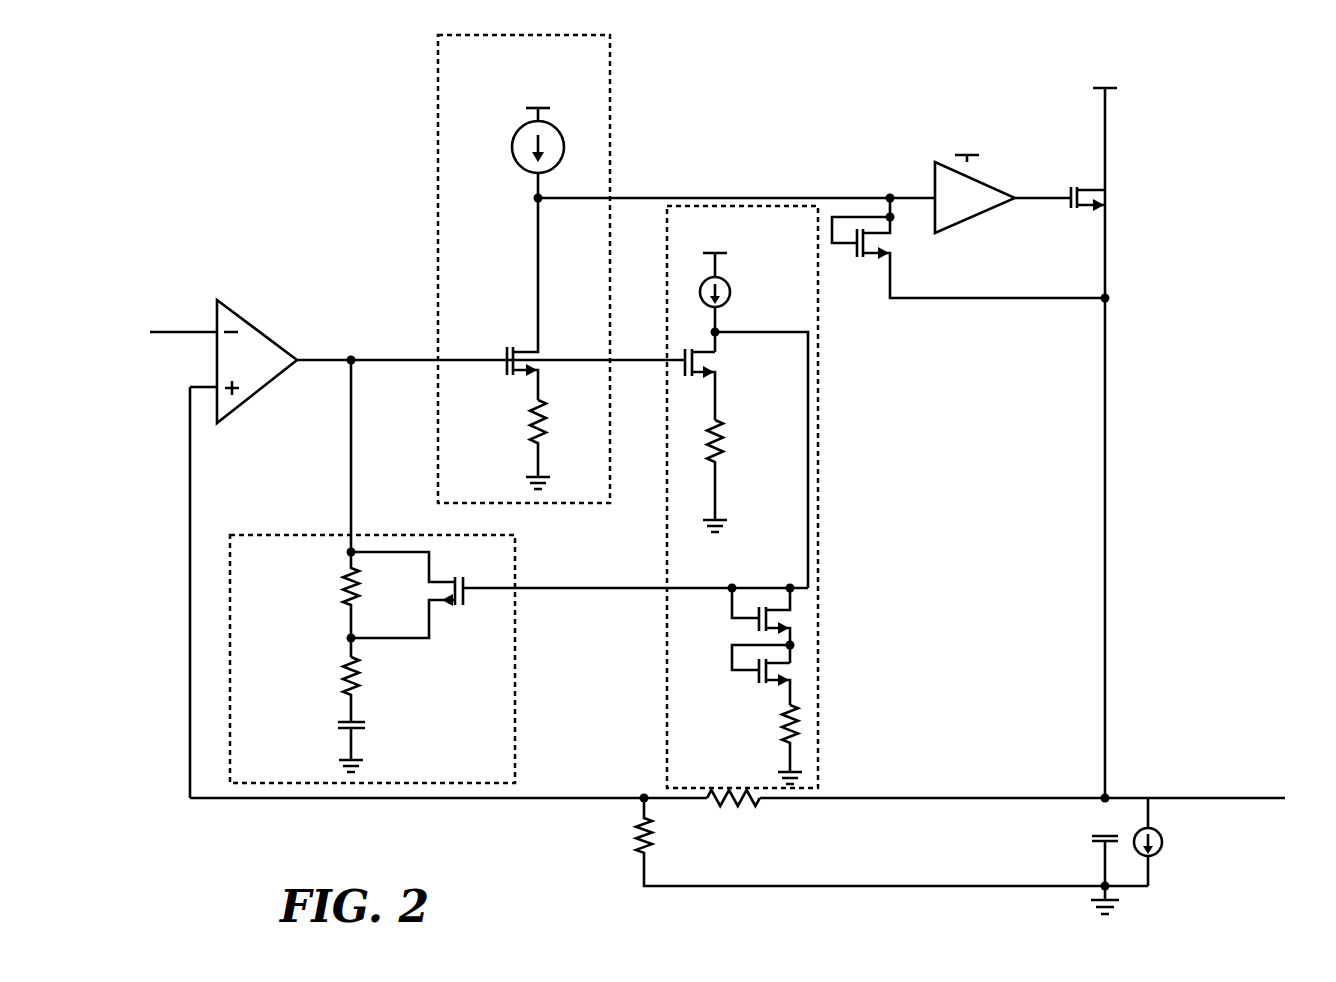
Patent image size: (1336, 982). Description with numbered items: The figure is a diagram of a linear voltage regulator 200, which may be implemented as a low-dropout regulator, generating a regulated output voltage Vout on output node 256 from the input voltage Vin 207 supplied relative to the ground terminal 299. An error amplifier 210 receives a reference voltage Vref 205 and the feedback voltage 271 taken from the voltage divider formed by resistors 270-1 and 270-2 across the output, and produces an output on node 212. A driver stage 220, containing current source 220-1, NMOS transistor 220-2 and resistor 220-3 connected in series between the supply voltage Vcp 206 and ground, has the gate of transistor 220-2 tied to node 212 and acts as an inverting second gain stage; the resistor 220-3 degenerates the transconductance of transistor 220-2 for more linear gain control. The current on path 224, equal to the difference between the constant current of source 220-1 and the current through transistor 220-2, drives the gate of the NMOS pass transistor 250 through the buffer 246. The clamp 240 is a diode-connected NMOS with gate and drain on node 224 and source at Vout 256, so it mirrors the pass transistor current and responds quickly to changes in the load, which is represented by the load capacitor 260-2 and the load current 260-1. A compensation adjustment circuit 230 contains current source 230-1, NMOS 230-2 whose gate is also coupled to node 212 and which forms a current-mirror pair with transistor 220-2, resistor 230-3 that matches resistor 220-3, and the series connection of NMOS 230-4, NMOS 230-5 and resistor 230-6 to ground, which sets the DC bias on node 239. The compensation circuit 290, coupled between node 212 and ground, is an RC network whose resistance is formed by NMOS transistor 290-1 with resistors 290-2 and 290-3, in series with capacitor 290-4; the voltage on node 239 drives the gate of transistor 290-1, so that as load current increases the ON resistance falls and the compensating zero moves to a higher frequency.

The linear voltage regulator 200 is at (322, 170).
The reference voltage Vref 205 is at (164, 332).
The supply voltage Vcp 206 is at (538, 108).
The input voltage Vin 207 is at (1109, 88).
The error amplifier 210 is at (260, 369).
The output node of error amplifier 212 is at (351, 356).
The driver stage 220 is at (488, 494).
The current source 220-1 is at (512, 151).
The NMOS transistor 220-2 is at (524, 350).
The resistor 220-3 is at (528, 425).
The path 224 is at (803, 198).
The compensation adjustment circuit 230 is at (721, 774).
The current source 230-1 is at (731, 294).
The NMOS transistor 230-2 is at (722, 368).
The resistor 230-3 is at (724, 442).
The NMOS transistor 230-4 is at (796, 626).
The NMOS transistor 230-5 is at (796, 676).
The resistor 230-6 is at (798, 720).
The node 239 is at (611, 588).
The clamp 240 is at (882, 254).
The buffer 246 is at (983, 208).
The pass transistor 250 is at (1100, 202).
The output node Vout 256 is at (1258, 798).
The load current 260-1 is at (1164, 846).
The load capacitor 260-2 is at (1088, 838).
The resistor 270-1 is at (745, 805).
The resistor 270-2 is at (638, 840).
The feedback voltage Vfb 271 is at (586, 798).
The compensation circuit 290 is at (493, 769).
The NMOS transistor 290-1 is at (460, 607).
The resistor 290-2 is at (340, 574).
The resistor 290-3 is at (340, 662).
The capacitor 290-4 is at (368, 723).
The ground terminal 299 is at (340, 762).